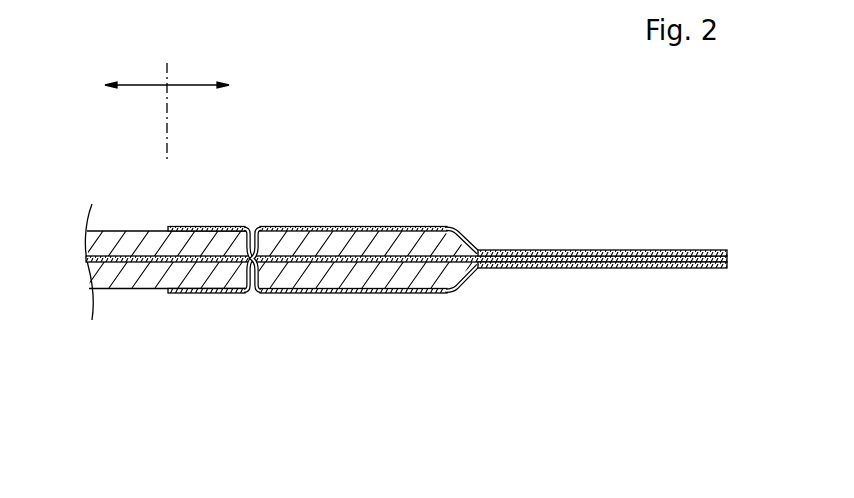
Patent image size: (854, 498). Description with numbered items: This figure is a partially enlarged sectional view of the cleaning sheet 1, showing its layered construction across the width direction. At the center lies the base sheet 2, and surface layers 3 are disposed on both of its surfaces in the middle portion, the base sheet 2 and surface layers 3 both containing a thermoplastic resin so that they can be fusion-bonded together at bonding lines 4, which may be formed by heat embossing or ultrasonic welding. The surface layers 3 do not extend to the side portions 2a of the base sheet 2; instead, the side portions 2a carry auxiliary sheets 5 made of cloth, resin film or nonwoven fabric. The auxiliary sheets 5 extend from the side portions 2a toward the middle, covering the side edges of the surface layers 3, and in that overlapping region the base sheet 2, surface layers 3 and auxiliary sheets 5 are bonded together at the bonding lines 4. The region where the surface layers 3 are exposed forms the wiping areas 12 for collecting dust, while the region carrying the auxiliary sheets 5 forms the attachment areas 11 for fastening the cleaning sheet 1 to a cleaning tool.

The cleaning sheet 1 is at (345, 341).
The base sheet 2 is at (354, 258).
The side portions 2a is at (517, 252).
The surface layers 3 is at (146, 243).
The bonding lines 4 is at (249, 240).
The auxiliary sheets 5 is at (595, 250).
The attachment areas 11 is at (167, 66).
The wiping areas 12 is at (135, 102).